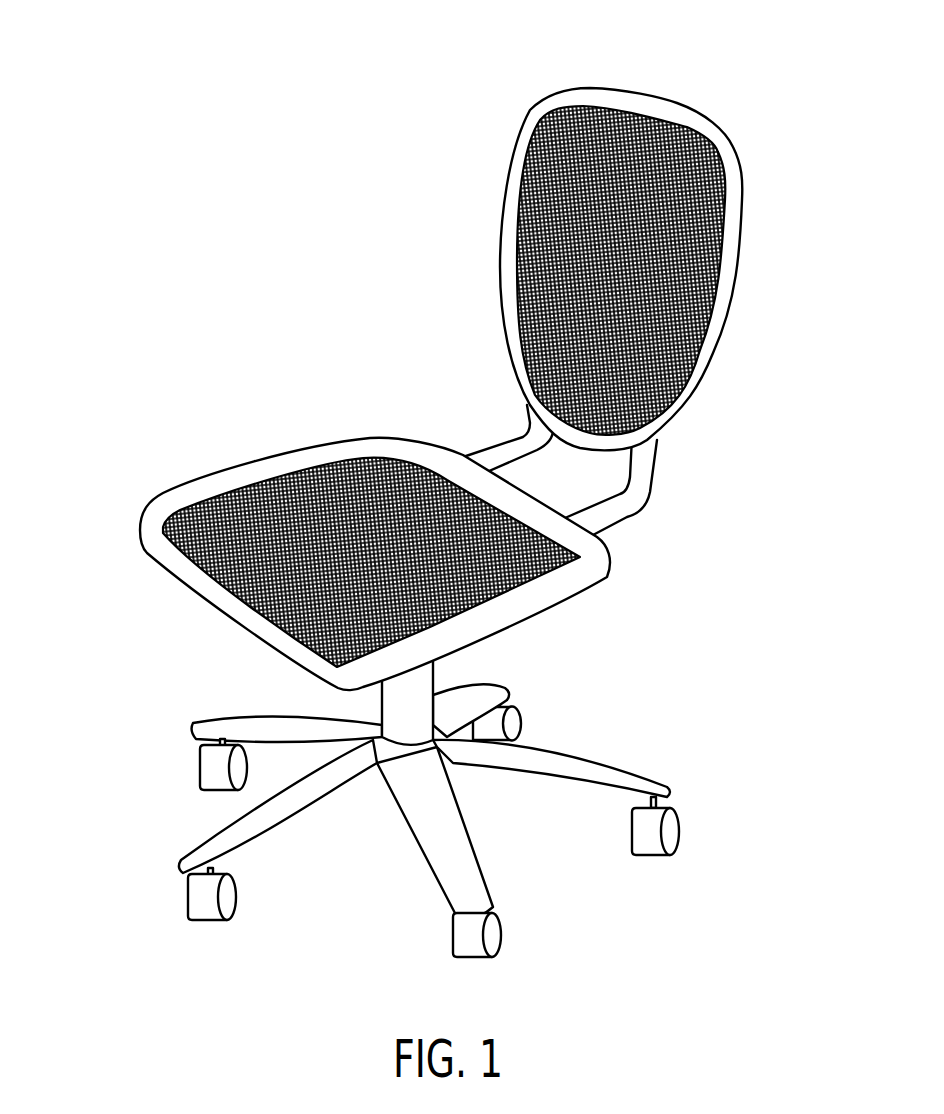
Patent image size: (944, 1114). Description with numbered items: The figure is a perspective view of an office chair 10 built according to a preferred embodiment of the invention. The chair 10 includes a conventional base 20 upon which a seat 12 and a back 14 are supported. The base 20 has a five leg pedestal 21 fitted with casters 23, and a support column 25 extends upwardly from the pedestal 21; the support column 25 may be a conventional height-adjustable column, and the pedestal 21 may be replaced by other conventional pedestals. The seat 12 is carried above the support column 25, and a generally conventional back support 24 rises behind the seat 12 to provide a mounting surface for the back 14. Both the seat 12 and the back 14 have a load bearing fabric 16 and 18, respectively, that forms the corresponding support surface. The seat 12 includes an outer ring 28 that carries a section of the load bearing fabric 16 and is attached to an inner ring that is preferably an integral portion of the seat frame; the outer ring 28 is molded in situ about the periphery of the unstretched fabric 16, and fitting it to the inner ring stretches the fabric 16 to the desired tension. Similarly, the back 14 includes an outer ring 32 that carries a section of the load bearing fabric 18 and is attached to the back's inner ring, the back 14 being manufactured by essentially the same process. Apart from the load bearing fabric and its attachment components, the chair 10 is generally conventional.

The office chair 10 is at (318, 174).
The seat 12 is at (227, 467).
The back 14 is at (737, 262).
The load bearing fabric 16 is at (527, 585).
The load bearing fabric 18 is at (603, 133).
The base 20 is at (342, 833).
The five leg pedestal 21 is at (623, 777).
The casters 23 is at (657, 858).
The back support 24 is at (664, 482).
The support column 25 is at (435, 680).
The outer ring 28 is at (367, 440).
The outer ring 32 is at (745, 183).